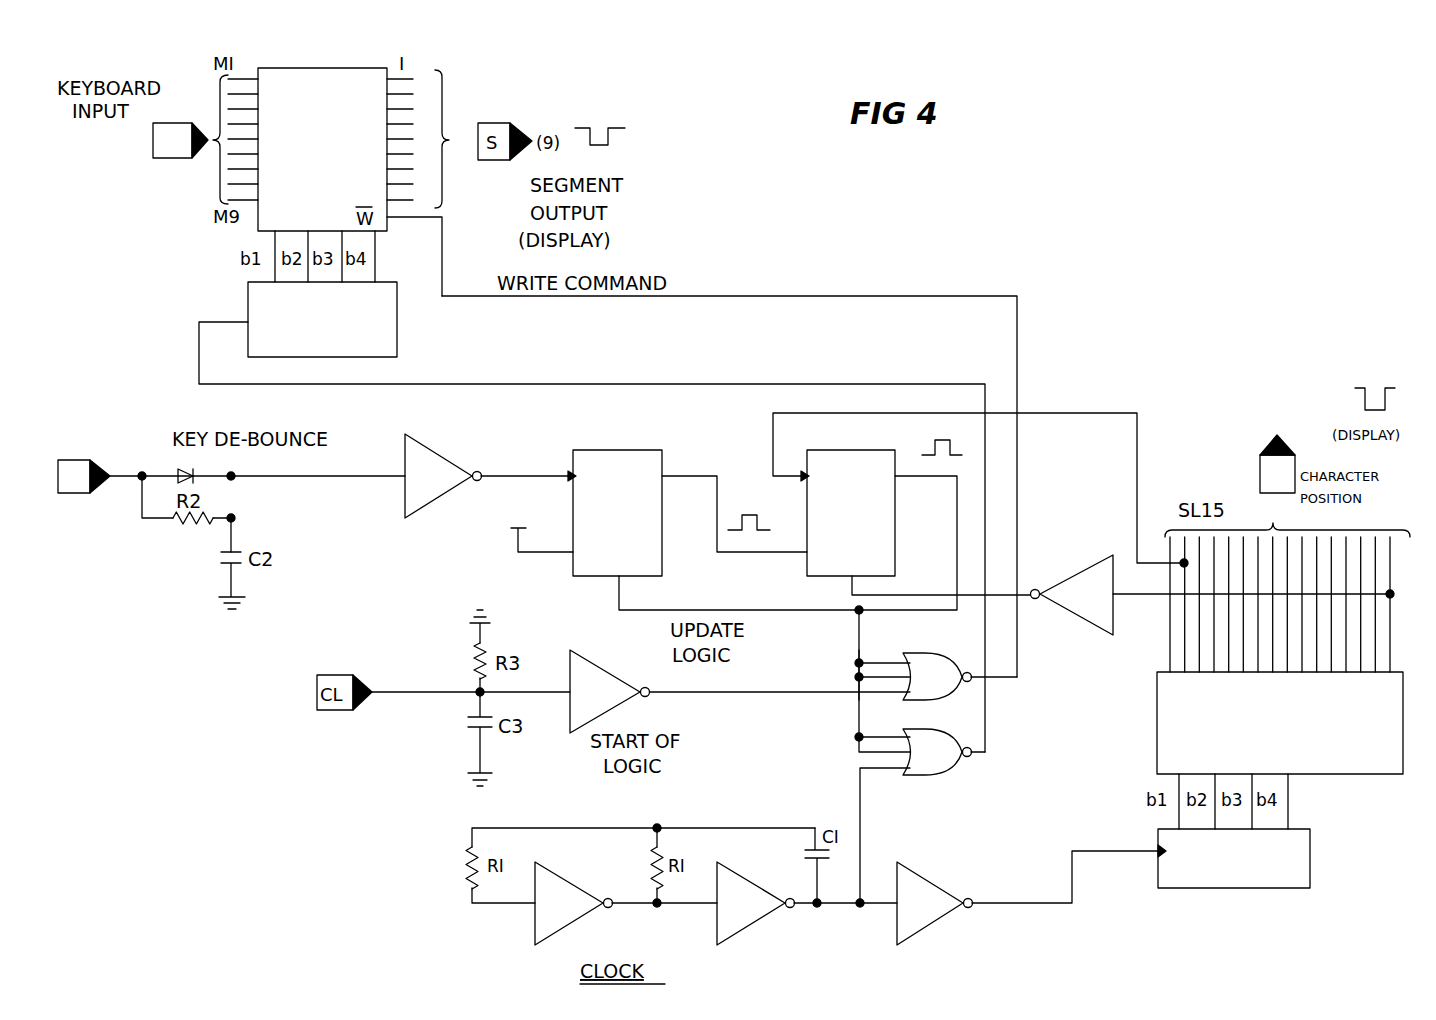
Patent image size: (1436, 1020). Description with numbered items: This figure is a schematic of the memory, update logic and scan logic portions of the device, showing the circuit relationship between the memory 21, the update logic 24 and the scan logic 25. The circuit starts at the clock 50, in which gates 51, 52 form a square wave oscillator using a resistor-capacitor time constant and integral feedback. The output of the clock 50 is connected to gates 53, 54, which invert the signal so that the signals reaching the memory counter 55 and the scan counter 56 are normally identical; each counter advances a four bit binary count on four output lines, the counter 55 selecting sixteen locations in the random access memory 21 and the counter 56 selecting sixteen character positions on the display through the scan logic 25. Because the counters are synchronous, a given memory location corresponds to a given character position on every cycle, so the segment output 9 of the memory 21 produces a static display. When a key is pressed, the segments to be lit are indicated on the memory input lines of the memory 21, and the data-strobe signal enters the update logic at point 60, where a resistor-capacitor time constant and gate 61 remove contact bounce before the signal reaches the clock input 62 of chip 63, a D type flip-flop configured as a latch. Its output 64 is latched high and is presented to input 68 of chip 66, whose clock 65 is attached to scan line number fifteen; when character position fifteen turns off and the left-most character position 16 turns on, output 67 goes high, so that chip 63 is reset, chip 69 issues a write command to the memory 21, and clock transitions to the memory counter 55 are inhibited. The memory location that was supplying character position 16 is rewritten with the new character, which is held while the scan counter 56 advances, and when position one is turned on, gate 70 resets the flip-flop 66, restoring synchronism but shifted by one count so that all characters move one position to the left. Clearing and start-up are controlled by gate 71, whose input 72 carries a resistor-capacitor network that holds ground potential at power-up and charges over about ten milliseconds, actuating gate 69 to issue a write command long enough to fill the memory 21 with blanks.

The memory 21 is at (318, 68).
The write output line 9 is at (414, 243).
The memory counter 55 is at (397, 335).
The data-strobe input point 60 is at (65, 460).
The gate 61 is at (440, 452).
The clock input 62 is at (528, 465).
The chip 63 is at (603, 450).
The output 64 is at (734, 499).
The clock 65 is at (980, 490).
The chip 66 is at (830, 450).
The output 67 is at (931, 447).
The input 68 is at (761, 527).
The chip 69 is at (920, 658).
The gate 70 is at (1087, 634).
The gate 71 is at (590, 662).
The input 72 is at (471, 680).
The update logic 24 is at (870, 690).
The scan logic 25 is at (1157, 722).
The gate 54 is at (935, 772).
The scan counter 56 is at (1310, 862).
The clock 50 is at (664, 920).
The gate 51 is at (553, 870).
The gate 52 is at (735, 870).
The gate 53 is at (925, 925).
The character position output 16 is at (1276, 449).